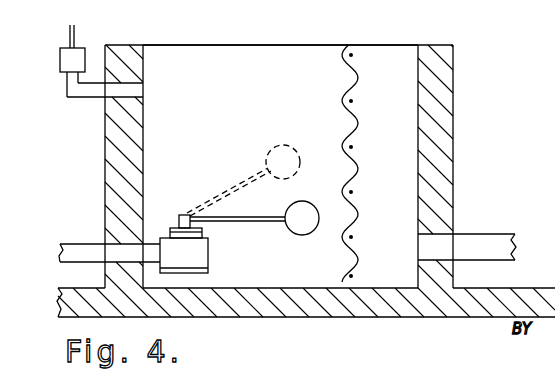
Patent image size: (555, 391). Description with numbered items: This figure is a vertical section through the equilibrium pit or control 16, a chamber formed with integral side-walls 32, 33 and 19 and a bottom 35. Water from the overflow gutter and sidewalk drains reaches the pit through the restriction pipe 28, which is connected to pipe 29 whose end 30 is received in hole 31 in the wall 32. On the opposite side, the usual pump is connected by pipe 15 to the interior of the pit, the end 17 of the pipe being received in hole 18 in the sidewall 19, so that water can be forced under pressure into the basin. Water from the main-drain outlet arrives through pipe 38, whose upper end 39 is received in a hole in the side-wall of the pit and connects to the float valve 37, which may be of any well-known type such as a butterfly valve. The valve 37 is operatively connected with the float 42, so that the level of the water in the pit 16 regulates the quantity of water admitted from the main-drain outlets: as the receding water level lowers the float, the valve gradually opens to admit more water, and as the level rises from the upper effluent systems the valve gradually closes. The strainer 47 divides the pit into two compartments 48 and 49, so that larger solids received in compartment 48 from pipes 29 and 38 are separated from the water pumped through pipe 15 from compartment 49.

The pipe 15 is at (483, 233).
The pit 16 is at (453, 53).
The end of pipe 17 is at (463, 233).
The hole 18 is at (455, 262).
The sidewall 19 is at (453, 117).
The restriction pipe 28 is at (75, 35).
The pipe 29 is at (78, 95).
The end 30 is at (125, 89).
The hole 31 is at (143, 85).
The wall 32 is at (105, 158).
The side-wall 33 is at (258, 102).
The bottom 35 is at (340, 313).
The float valve 37 is at (190, 213).
The pipe 38 is at (66, 244).
The upper end 39 is at (60, 253).
The float 42 is at (300, 203).
The strainer 47 is at (351, 279).
The compartment 48 is at (293, 281).
The compartment 49 is at (402, 277).